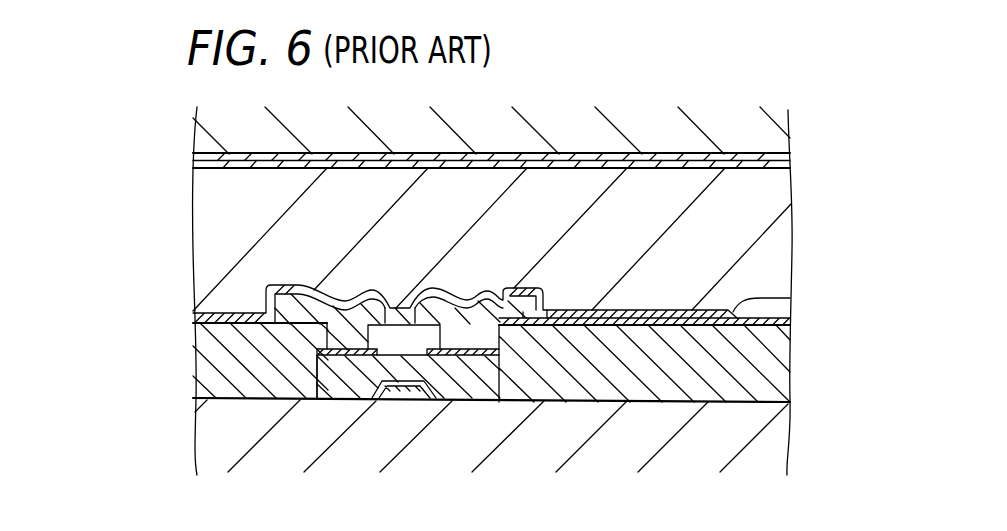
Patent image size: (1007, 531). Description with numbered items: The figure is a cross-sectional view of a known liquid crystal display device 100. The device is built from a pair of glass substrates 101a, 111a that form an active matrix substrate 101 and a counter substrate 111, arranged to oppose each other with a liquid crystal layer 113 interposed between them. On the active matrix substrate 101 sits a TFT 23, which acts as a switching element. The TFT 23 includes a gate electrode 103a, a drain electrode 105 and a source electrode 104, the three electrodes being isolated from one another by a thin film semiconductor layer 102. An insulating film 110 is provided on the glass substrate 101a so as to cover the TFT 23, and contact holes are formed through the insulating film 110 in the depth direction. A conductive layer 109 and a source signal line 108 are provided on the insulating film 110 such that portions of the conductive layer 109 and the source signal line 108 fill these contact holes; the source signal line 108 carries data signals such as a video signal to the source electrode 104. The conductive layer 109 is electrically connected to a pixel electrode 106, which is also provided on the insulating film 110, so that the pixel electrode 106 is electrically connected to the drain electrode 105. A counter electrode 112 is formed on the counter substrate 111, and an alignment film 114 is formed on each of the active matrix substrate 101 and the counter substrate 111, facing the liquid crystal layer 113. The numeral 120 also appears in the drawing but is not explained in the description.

The liquid crystal display device 100 is at (785, 48).
The counter substrate 111 is at (102, 170).
The glass substrate 111a is at (775, 135).
The counter electrode 112 is at (790, 158).
The alignment film 114 is at (790, 176).
The liquid crystal layer 113 is at (780, 242).
The TFT 23 is at (371, 248).
The source signal line 108 is at (268, 302).
The insulating film 110 is at (215, 352).
The source electrode 104 is at (343, 390).
The drain electrode 105 is at (455, 358).
The conductive layer 109 is at (503, 325).
The gate electrode 103a is at (423, 398).
The thin film semiconductor layer 102 is at (360, 398).
The thin film transistor 120 is at (327, 400).
The pixel electrode 106 is at (650, 322).
The glass substrate 101a is at (780, 440).
The active matrix substrate 101 is at (87, 497).